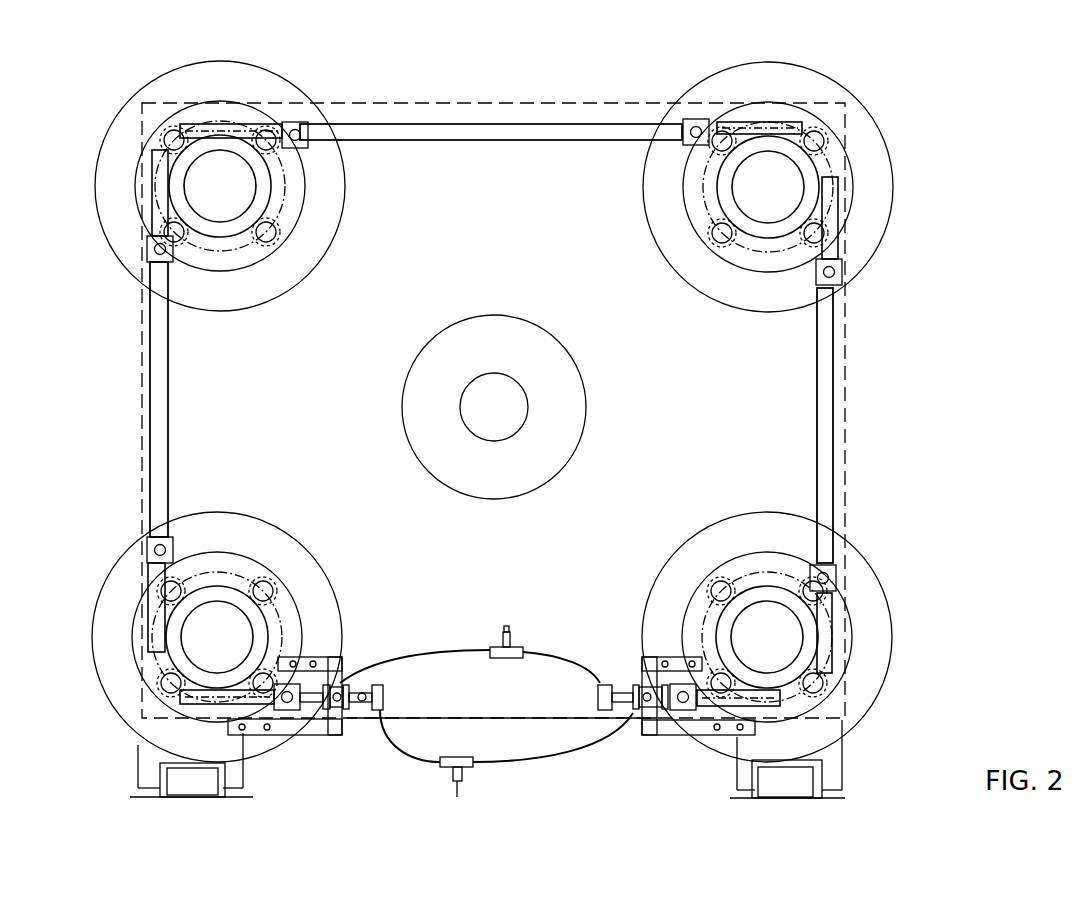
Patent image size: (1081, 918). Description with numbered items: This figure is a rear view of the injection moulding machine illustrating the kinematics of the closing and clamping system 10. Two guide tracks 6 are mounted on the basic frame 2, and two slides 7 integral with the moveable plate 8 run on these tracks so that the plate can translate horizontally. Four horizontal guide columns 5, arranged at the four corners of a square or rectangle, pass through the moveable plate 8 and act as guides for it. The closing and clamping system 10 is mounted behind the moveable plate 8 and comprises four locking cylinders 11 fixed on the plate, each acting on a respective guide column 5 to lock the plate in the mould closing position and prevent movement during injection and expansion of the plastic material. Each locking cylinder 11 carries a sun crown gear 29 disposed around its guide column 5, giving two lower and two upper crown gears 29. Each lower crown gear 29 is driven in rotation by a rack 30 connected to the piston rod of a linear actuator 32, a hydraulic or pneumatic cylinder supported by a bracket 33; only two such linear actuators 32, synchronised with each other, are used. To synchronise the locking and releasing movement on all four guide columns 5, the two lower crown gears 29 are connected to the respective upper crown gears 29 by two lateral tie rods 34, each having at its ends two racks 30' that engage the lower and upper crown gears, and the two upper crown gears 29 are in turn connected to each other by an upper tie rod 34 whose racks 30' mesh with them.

The basic frame 2 is at (228, 800).
The guide columns 5 is at (148, 215).
The guide tracks 6 is at (187, 787).
The slides 7 is at (147, 763).
The moveable plate 8 is at (453, 213).
The closing and clamping system 10 is at (887, 108).
The locking cylinders 11 is at (163, 88).
The crown gears 29 is at (810, 173).
The rack 30 is at (487, 763).
The racks 30' is at (501, 378).
The linear actuator 32 is at (352, 700).
The bracket 33 is at (318, 727).
The tie rods 34 is at (527, 133).